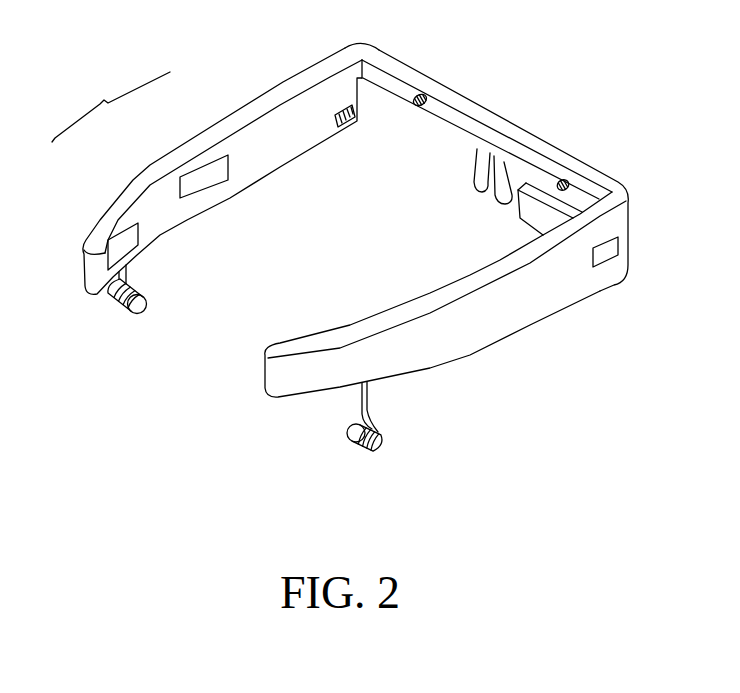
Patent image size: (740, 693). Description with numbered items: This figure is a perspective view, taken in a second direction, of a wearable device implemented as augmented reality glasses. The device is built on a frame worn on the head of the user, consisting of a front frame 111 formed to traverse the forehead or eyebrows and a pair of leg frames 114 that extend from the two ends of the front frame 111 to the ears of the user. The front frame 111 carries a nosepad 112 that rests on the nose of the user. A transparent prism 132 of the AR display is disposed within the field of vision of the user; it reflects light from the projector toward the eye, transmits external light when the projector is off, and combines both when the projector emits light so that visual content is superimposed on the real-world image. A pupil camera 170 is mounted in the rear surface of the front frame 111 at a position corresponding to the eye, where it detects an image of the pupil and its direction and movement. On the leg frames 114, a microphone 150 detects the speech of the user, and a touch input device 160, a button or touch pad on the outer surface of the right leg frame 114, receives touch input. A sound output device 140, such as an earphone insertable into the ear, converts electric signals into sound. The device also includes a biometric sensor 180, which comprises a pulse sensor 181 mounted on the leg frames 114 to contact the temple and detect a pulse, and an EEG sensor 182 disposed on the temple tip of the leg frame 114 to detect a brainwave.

The front frame 111 is at (487, 106).
The nosepad 112 is at (480, 190).
The leg frames 114 is at (261, 97).
The transparent prism 132 is at (527, 182).
The sound output device 140 is at (125, 315).
The microphone 150 is at (352, 130).
The touch input device 160 is at (605, 258).
The pupil camera 170 is at (435, 72).
The biometric sensor 180 is at (111, 107).
The pulse sensor 181 is at (203, 177).
The EEG sensor 182 is at (122, 223).